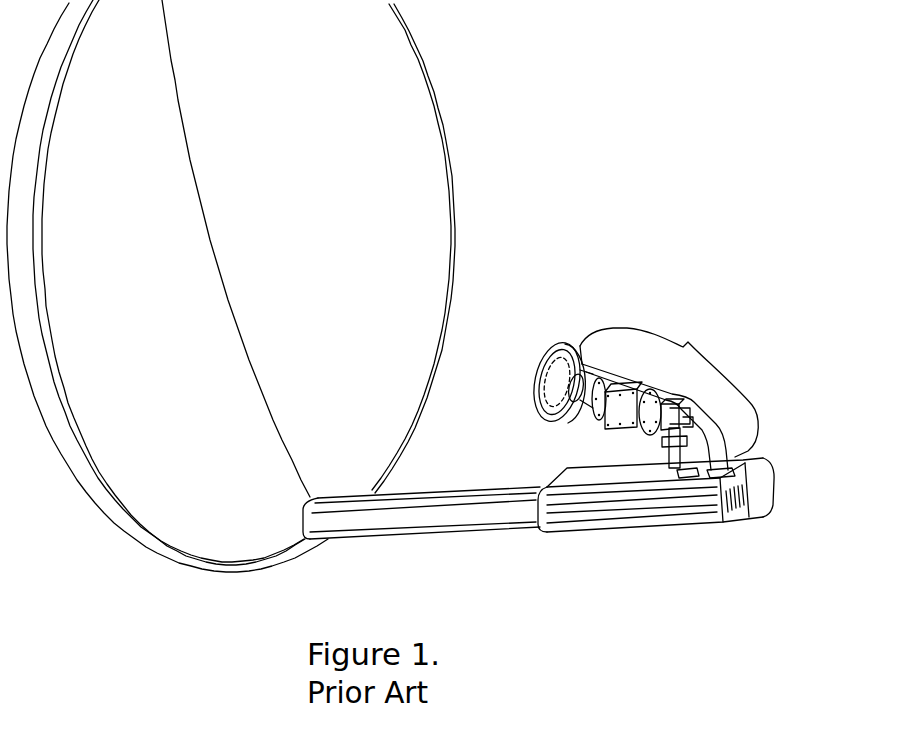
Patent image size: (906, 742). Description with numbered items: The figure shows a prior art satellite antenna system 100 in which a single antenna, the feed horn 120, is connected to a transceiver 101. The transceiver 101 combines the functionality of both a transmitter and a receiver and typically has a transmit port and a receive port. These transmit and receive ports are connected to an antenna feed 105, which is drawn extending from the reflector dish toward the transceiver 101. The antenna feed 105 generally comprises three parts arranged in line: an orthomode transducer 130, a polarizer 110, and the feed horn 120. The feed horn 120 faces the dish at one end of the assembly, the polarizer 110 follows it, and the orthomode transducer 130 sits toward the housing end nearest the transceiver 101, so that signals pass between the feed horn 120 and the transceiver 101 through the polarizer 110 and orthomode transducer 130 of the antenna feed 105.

The satellite antenna system 100 is at (578, 31).
The transceiver 101 is at (648, 512).
The antenna feed 105 is at (700, 328).
The polarizer 110 is at (612, 418).
The feed horn 120 is at (558, 367).
The orthomode transducer (OMT) 130 is at (673, 410).